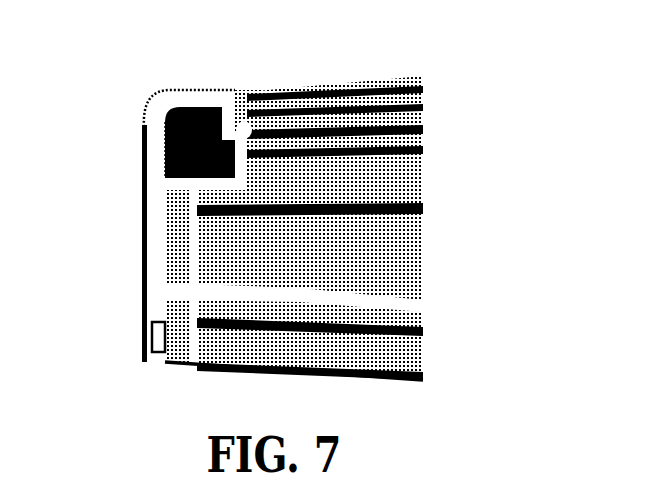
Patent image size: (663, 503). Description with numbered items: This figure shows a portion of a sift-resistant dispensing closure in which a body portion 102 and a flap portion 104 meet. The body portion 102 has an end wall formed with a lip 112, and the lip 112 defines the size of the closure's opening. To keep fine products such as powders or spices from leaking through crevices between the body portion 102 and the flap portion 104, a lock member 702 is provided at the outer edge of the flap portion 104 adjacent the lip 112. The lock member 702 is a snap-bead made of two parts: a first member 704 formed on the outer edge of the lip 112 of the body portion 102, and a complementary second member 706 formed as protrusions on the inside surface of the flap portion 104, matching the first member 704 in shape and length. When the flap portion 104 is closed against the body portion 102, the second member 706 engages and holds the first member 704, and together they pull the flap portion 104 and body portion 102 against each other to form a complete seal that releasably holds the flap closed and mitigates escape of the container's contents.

The body portion 102 is at (435, 258).
The flap portion 104 is at (443, 143).
The lip 112 is at (282, 224).
The lock member 702 is at (232, 142).
The first member 704 is at (243, 133).
The second member 706 is at (227, 118).